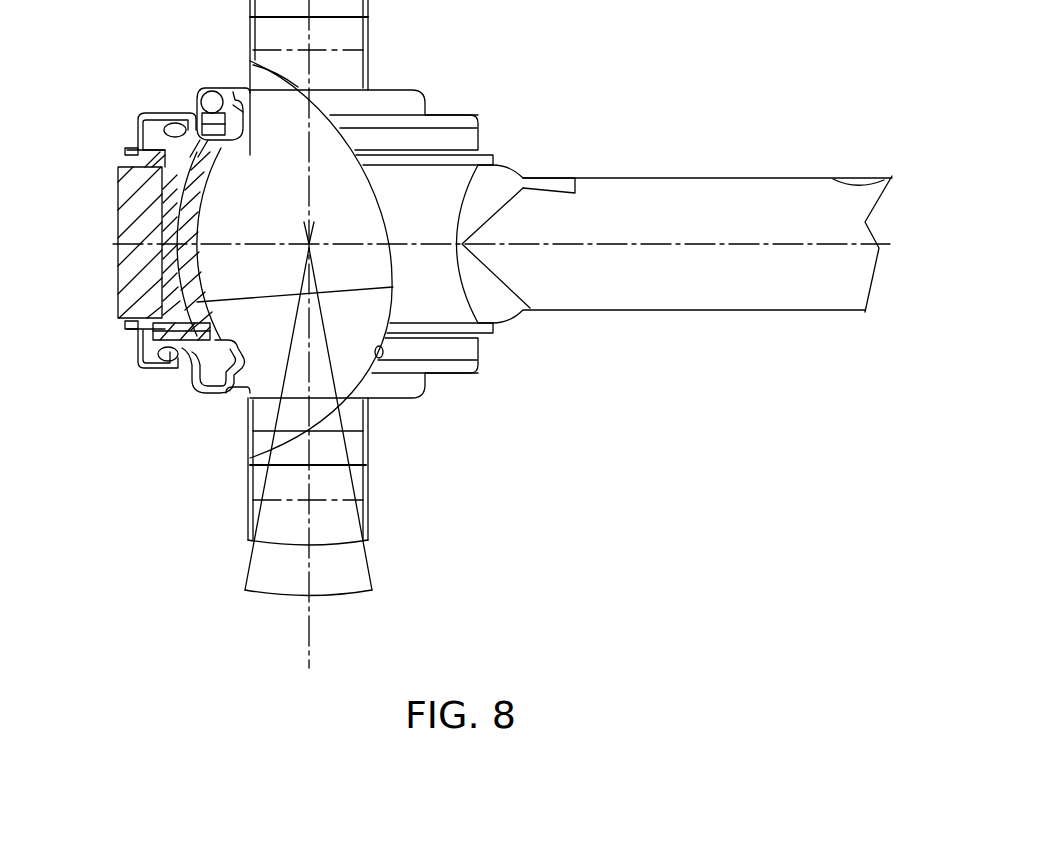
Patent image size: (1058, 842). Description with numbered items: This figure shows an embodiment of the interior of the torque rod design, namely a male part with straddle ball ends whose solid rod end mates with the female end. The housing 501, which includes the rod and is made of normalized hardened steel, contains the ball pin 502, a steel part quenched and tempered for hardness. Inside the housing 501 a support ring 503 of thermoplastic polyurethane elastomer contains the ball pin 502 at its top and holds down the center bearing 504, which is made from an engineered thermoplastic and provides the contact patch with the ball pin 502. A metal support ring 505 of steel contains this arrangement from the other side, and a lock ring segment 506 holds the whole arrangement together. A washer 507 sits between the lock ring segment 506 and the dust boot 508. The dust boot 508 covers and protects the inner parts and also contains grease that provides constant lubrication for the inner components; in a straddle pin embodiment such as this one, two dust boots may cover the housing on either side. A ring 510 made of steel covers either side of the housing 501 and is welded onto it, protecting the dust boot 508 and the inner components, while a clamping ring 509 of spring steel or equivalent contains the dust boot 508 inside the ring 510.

The housing 501 is at (147, 200).
The ball pin 502 is at (212, 287).
The support ring (TPC) 503 is at (167, 163).
The center bearing 504 is at (163, 250).
The support ring (metal) 505 is at (158, 340).
The lock ring segment 506 is at (148, 365).
The washer 507 is at (185, 376).
The dust boot 508 is at (203, 87).
The clamping ring 509 is at (218, 125).
The ring 510 is at (132, 132).